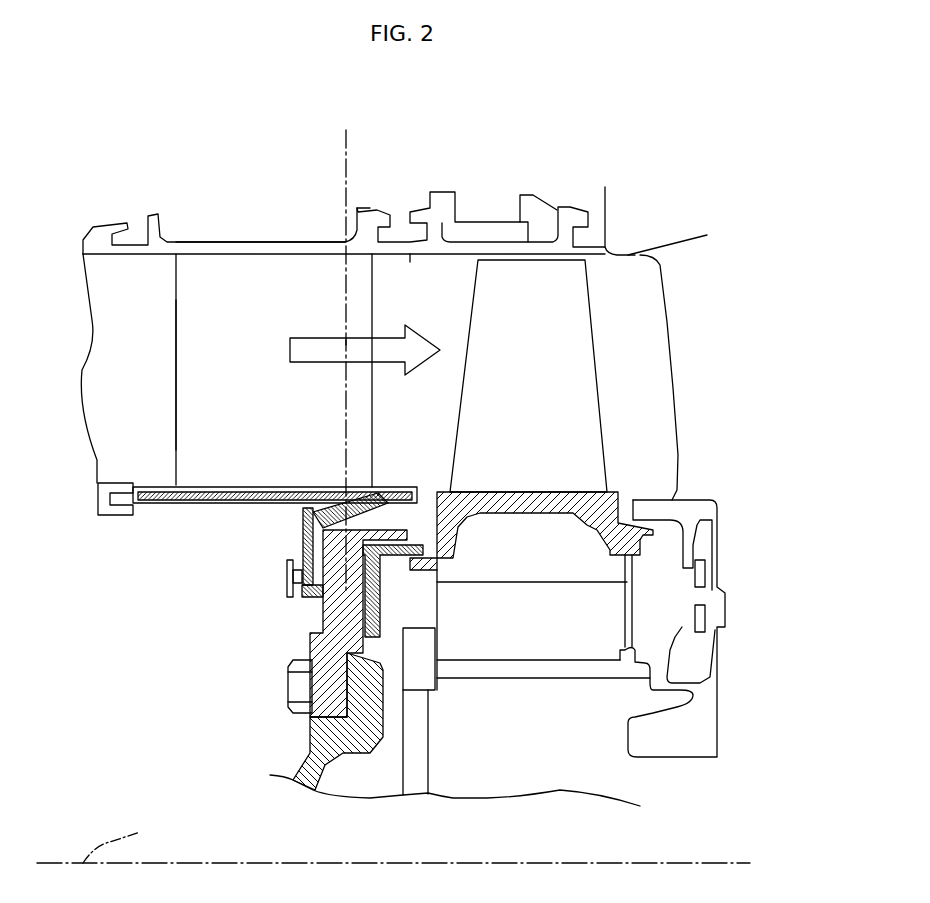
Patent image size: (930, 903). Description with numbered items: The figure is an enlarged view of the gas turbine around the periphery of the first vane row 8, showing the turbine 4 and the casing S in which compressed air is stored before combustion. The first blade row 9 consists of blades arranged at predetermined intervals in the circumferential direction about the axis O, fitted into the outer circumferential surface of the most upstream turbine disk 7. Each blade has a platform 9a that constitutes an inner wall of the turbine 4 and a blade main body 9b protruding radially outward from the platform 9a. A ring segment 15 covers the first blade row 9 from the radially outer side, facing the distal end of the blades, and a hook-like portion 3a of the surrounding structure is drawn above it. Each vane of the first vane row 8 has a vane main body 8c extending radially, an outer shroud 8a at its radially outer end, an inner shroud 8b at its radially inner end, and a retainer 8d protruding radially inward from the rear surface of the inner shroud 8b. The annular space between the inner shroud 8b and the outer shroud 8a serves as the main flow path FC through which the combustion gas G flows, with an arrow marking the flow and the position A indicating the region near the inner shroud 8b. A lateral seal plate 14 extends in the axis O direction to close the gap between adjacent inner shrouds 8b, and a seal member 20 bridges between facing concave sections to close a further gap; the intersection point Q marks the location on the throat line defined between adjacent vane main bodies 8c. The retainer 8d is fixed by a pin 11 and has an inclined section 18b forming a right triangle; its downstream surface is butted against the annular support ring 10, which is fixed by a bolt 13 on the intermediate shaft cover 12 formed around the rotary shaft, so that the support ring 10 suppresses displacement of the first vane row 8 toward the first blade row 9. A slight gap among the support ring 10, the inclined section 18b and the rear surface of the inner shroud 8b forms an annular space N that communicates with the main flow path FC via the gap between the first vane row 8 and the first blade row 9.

The turbine 4 is at (569, 173).
The casing hook 3a is at (108, 222).
The ring segment 15 is at (478, 250).
The first vane row 8 is at (176, 365).
The outer shroud 8a is at (253, 245).
The inner shroud 8b is at (167, 502).
The vane main body 8c is at (202, 273).
The retainer 8d is at (302, 547).
The lateral seal plate 14 is at (148, 497).
The seal member 20 is at (303, 522).
The pin 11 is at (286, 577).
The support ring 10 is at (323, 610).
The inclined section 18b is at (367, 500).
The bolt 13 is at (288, 690).
The intermediate shaft cover 12 is at (310, 752).
The turbine disk 7 is at (525, 678).
The first blade row 9 is at (598, 388).
The platform 9a is at (540, 507).
The blade main body 9b is at (575, 312).
The main flow path FC is at (433, 309).
The combustion gas G is at (338, 342).
The position A is at (257, 483).
The intersection point Q is at (346, 493).
The annular space N is at (400, 530).
The casing S is at (143, 669).
The axis O is at (700, 863).